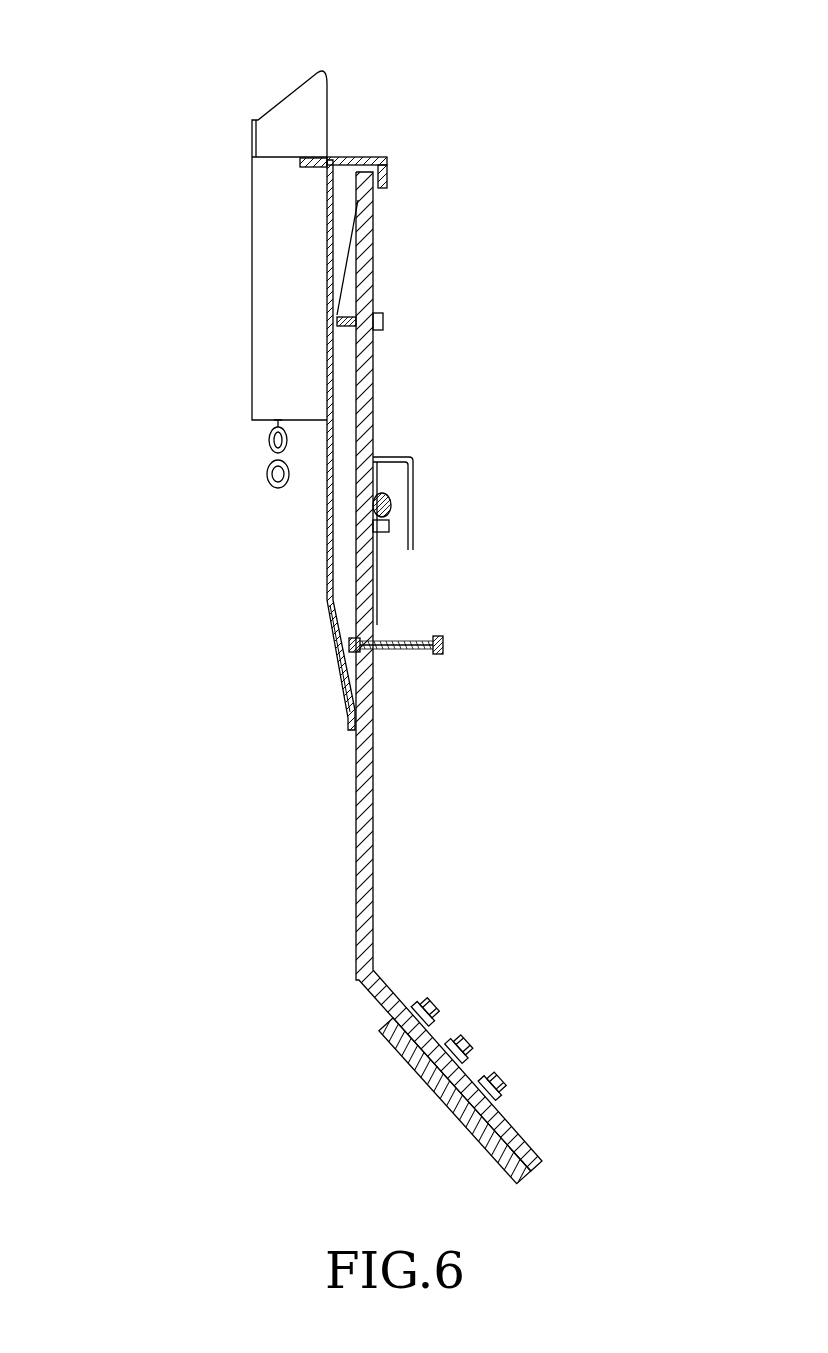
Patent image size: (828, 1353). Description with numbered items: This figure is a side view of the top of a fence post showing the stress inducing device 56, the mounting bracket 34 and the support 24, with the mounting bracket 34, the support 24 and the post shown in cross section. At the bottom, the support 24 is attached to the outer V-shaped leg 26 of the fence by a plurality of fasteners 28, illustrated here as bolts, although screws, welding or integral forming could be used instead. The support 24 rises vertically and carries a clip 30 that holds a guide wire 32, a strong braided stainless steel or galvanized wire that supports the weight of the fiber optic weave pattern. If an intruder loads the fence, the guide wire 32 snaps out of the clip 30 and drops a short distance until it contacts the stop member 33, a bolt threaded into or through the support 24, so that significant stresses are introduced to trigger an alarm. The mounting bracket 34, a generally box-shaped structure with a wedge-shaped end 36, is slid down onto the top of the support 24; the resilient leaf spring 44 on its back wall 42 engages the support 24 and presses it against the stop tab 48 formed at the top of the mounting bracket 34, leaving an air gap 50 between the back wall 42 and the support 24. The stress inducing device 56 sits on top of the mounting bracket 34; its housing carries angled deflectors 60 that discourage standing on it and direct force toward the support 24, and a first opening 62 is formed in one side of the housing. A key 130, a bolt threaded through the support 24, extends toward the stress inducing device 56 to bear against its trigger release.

The stress inducing device 56 is at (239, 250).
The angled deflectors 60 is at (292, 108).
The first opening 62 is at (308, 157).
The mounting bracket 34 is at (366, 157).
The stop tab 48 is at (390, 180).
The back wall 42 is at (352, 446).
The air gap 50 is at (345, 378).
The support 24 is at (499, 872).
The outer V-shaped leg 26 is at (532, 1152).
The fasteners 28 is at (437, 1022).
The leaf spring 44 is at (351, 262).
The key 130 is at (334, 340).
The clip 30 is at (455, 515).
The guide wire 32 is at (392, 487).
The stop member 33 is at (444, 645).
The wedge-shaped end 36 is at (332, 640).